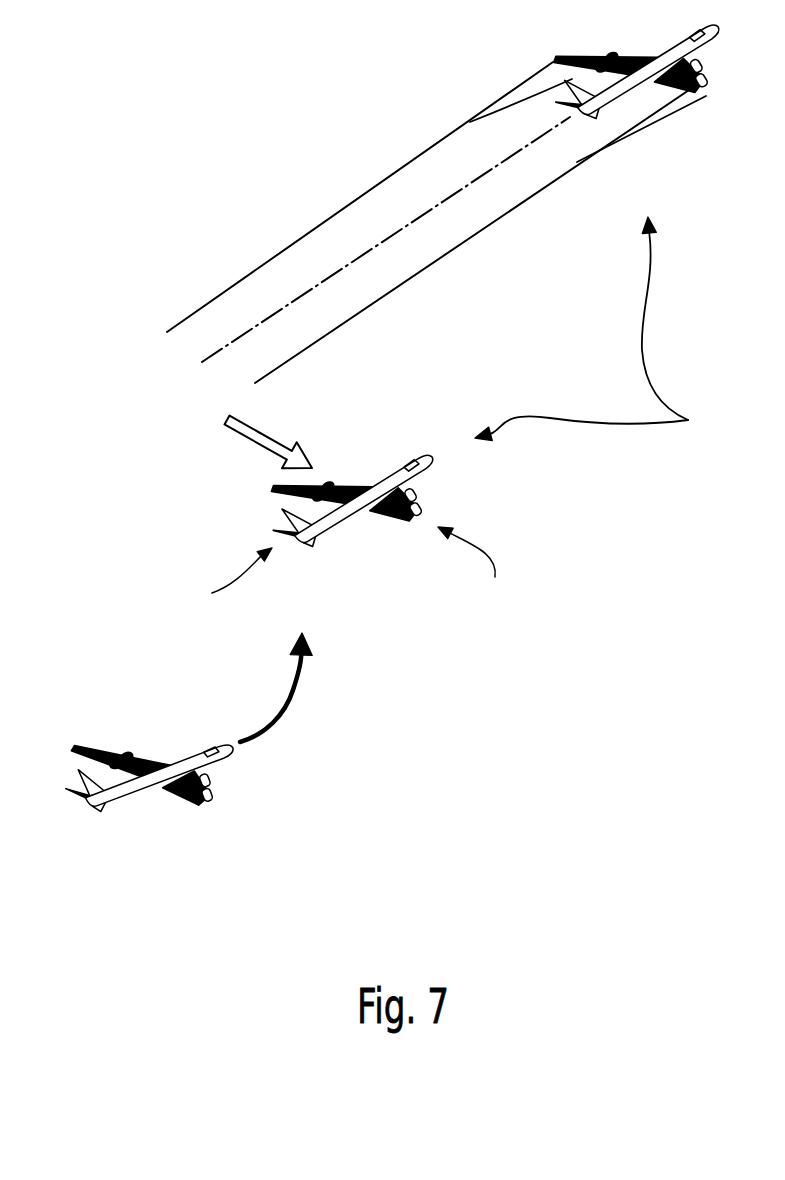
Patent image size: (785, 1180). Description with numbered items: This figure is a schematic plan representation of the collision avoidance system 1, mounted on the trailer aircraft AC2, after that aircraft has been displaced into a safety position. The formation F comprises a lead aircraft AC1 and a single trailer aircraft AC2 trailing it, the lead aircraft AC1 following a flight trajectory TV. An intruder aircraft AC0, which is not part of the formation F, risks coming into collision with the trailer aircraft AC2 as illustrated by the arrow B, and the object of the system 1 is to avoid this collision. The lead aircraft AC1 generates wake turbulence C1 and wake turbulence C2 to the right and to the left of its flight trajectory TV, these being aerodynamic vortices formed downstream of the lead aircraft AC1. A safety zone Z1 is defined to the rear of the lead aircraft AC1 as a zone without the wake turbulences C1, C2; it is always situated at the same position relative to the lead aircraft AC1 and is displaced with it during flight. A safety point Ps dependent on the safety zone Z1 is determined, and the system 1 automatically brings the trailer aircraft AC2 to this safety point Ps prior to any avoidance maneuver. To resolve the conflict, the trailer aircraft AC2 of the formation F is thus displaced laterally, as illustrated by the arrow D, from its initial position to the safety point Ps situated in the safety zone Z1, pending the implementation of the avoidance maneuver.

The system 1 is at (368, 509).
The intruder aircraft AC0 is at (140, 788).
The lead aircraft AC1 is at (630, 92).
The trailer aircraft AC2 is at (350, 522).
The arrow B is at (288, 702).
The wake turbulence C1 is at (302, 352).
The wake turbulence C2 is at (187, 315).
The arrow D is at (247, 438).
The formation F is at (591, 329).
The safety point Ps is at (226, 579).
The flight trajectory TV is at (397, 230).
The safety zone Z1 is at (474, 568).